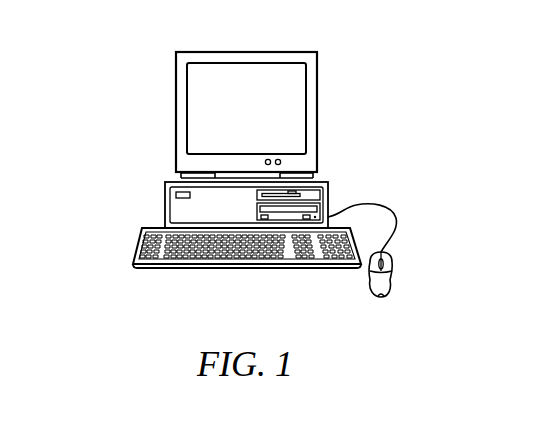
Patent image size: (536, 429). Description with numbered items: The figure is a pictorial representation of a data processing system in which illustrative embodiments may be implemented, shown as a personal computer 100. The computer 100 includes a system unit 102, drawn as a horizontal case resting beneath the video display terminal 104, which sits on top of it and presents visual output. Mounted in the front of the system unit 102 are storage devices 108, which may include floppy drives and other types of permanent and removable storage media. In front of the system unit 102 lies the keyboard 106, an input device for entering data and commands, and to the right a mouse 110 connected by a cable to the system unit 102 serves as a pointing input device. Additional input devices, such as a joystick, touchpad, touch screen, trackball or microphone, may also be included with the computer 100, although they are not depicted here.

The computer 100 is at (112, 97).
The system unit 102 is at (165, 203).
The video display terminal 104 is at (318, 113).
The keyboard 106 is at (245, 270).
The storage devices 108 is at (293, 196).
The mouse 110 is at (393, 278).